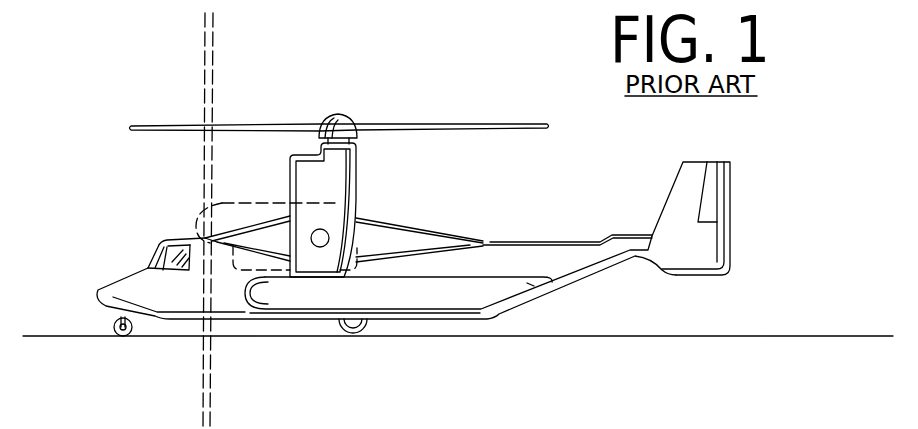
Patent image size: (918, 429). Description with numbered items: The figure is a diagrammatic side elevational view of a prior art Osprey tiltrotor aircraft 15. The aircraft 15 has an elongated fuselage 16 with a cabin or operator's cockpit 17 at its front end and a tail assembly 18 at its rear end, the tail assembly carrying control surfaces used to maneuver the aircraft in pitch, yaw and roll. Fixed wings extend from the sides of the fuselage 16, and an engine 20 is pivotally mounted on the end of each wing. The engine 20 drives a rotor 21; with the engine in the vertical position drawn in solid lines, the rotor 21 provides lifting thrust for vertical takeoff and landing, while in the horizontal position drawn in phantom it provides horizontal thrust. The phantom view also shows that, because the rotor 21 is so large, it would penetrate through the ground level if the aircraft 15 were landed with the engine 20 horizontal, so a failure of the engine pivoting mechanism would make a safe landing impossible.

The V-22 aircraft 15 is at (483, 198).
The fuselage 16 is at (510, 261).
The operator's cockpit 17 is at (160, 251).
The tail assembly 18 is at (717, 205).
The engine 20 is at (340, 186).
The rotor 21 is at (380, 124).